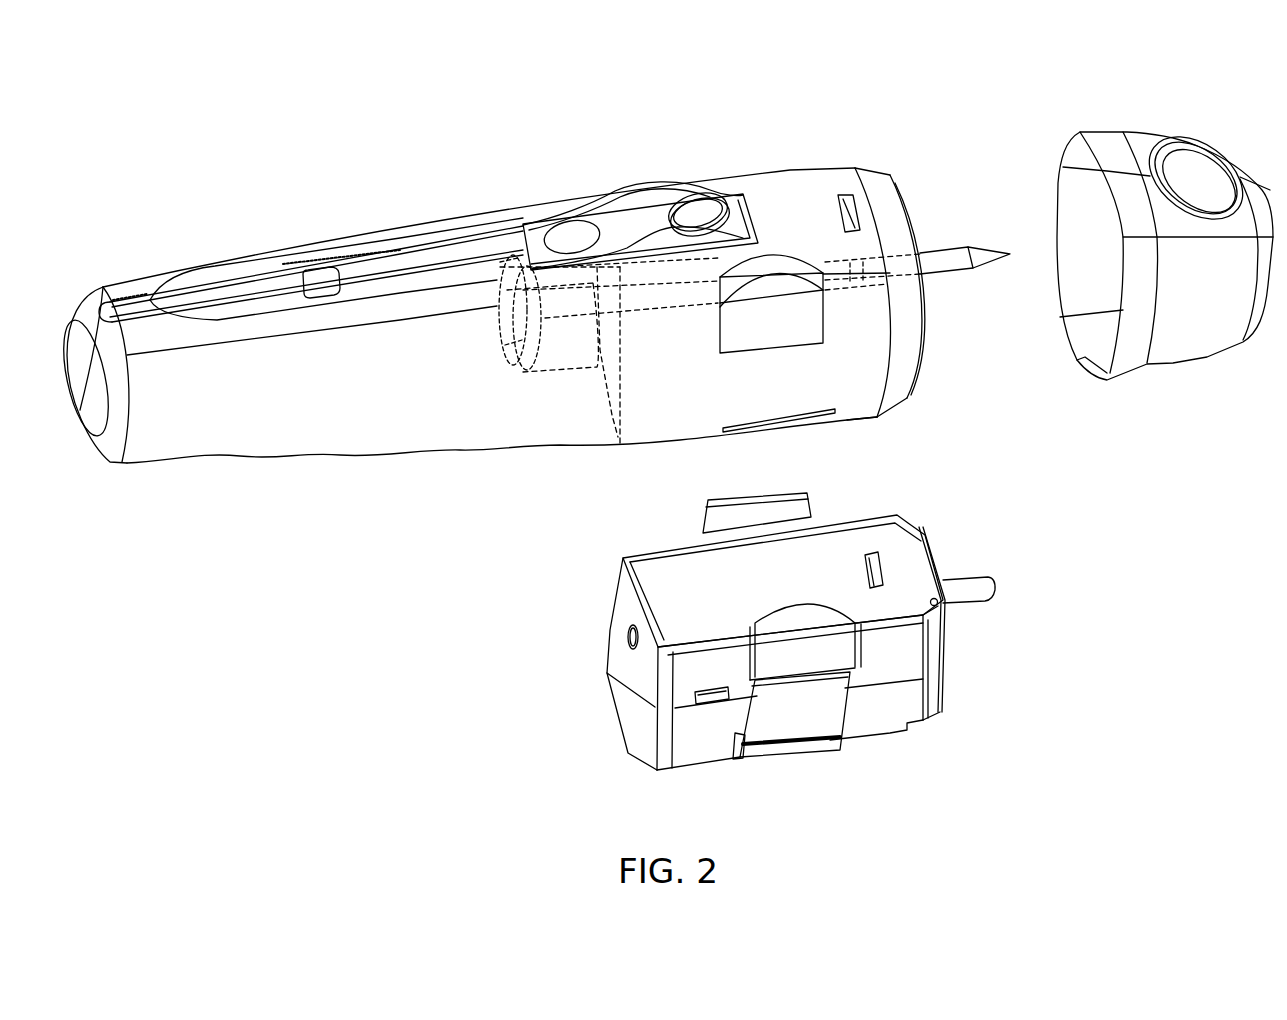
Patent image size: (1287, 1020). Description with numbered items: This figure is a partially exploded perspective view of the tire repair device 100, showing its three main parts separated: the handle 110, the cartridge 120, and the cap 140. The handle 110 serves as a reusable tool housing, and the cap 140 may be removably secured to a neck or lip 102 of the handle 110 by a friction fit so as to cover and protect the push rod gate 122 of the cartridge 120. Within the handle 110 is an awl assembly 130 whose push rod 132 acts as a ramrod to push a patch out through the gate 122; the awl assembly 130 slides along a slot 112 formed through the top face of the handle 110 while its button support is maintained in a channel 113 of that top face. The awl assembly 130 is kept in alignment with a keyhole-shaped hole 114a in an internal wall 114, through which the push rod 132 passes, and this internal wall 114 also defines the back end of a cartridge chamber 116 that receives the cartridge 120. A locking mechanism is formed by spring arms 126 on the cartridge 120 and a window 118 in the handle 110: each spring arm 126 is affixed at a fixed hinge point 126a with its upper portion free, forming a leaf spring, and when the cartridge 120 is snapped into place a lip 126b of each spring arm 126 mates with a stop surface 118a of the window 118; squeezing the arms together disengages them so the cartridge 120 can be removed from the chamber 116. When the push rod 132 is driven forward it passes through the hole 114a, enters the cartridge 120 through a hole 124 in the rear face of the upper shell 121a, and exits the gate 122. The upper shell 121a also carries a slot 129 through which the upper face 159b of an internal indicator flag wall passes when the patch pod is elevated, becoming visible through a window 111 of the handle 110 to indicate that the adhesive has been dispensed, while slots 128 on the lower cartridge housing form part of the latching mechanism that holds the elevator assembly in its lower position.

The tire repair device 100 is at (230, 108).
The neck or lip 102 is at (907, 398).
The handle 110 is at (697, 434).
The window 111 is at (838, 210).
The slot 112 is at (426, 268).
The channel 113 is at (250, 281).
The internal wall 114 is at (612, 404).
The hole 114a is at (619, 324).
The cartridge chamber 116 is at (872, 426).
The window 118 is at (738, 165).
The stop surface 118a is at (782, 323).
The cartridge 120 is at (890, 741).
The upper shell 121a is at (734, 600).
The gate 122 is at (990, 600).
The hole 124 is at (628, 640).
The spring arms 126 is at (830, 655).
The fixed hinge point 126a is at (781, 763).
The lip 126b is at (785, 687).
The slots 128 is at (720, 703).
The slot 129 is at (867, 560).
The awl assembly 130 is at (527, 365).
The push rod 132 is at (957, 273).
The cap 140 is at (1160, 364).
The upper face 159b is at (921, 531).